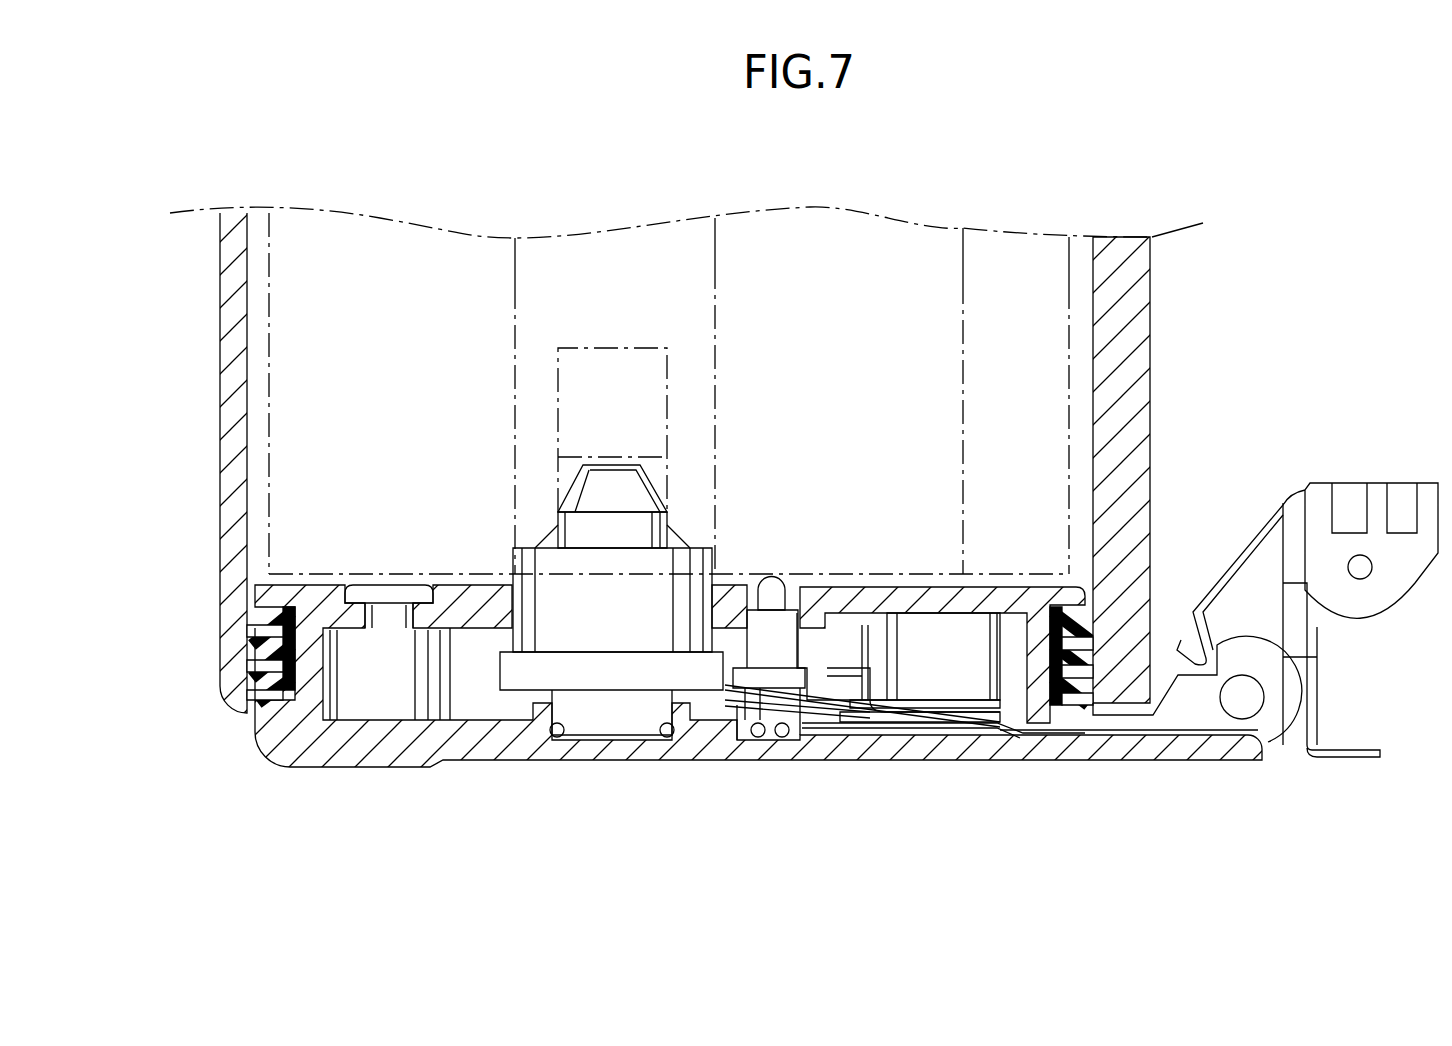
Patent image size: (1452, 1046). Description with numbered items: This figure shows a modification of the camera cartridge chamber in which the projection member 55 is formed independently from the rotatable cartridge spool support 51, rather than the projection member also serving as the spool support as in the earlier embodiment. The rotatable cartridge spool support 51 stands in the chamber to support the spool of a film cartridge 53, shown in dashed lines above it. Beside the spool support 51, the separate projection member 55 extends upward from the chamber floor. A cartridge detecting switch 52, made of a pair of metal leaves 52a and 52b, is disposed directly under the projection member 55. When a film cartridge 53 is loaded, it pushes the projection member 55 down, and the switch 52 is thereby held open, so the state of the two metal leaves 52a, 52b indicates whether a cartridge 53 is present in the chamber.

The rotatable cartridge spool support 51 is at (583, 500).
The cartridge detecting switch 52 is at (905, 761).
The metal leaf 52a is at (737, 710).
The metal leaf 52b is at (832, 710).
The film cartridge 53 is at (912, 278).
The projection member 55 is at (768, 588).